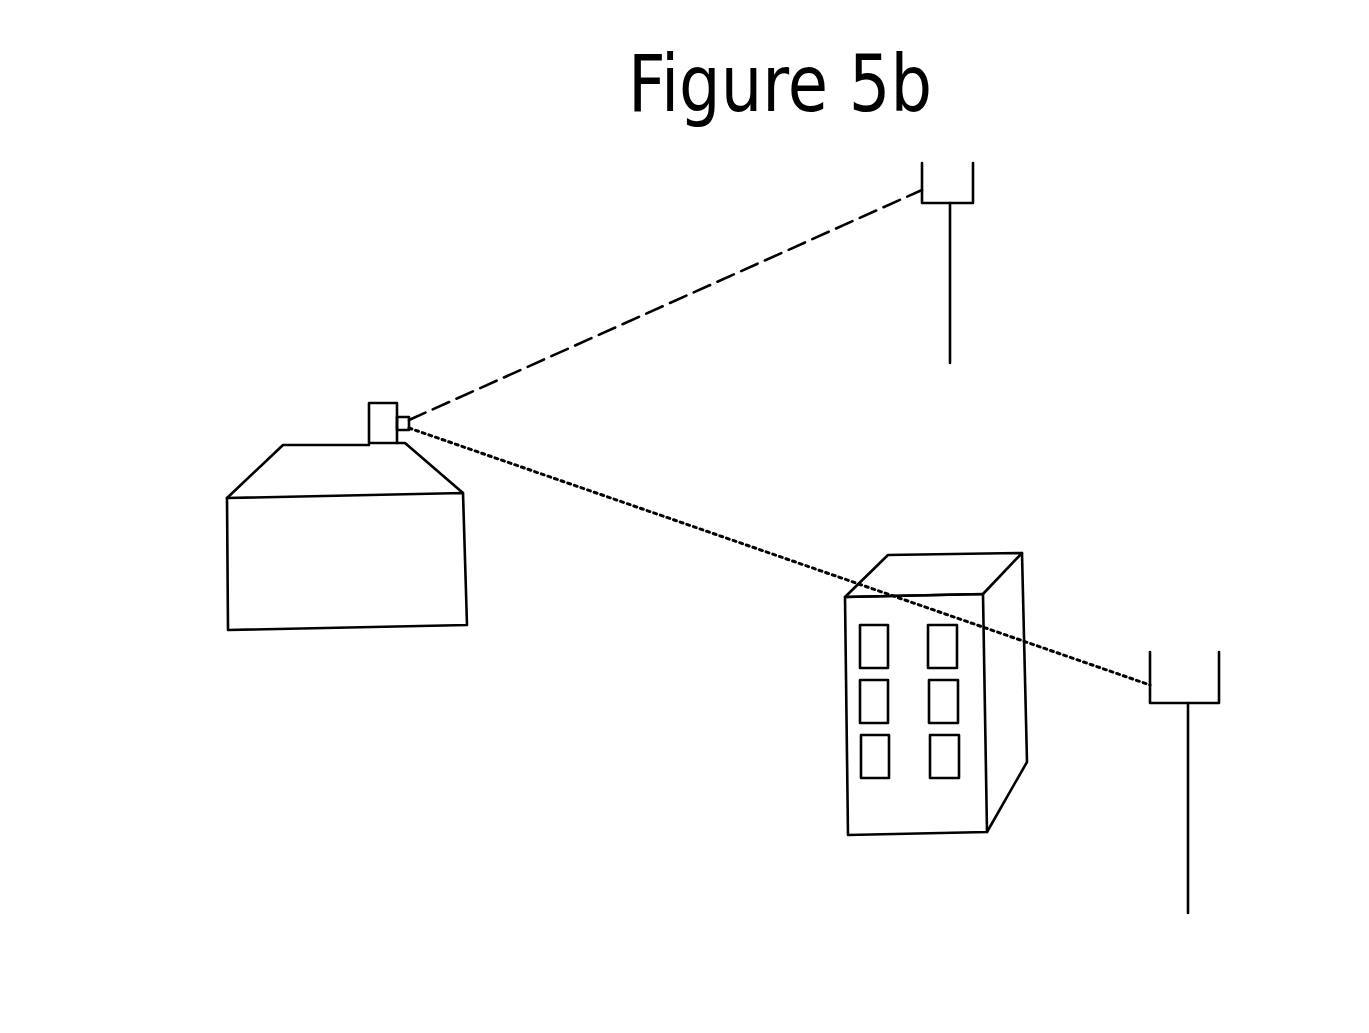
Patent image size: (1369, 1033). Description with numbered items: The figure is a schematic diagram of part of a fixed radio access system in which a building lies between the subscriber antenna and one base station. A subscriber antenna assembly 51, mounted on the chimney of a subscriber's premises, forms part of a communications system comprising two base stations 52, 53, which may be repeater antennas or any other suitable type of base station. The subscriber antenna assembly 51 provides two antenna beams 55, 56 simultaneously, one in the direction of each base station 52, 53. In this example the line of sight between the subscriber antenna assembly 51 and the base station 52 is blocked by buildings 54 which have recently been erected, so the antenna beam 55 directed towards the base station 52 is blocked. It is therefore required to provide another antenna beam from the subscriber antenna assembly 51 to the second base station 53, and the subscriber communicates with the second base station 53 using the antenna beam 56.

The subscriber antenna assembly 51 is at (407, 417).
The base station 52 is at (1188, 822).
The second base station 53 is at (950, 272).
The buildings 54 is at (1000, 603).
The antenna beam 55 is at (798, 563).
The antenna beam 56 is at (672, 303).